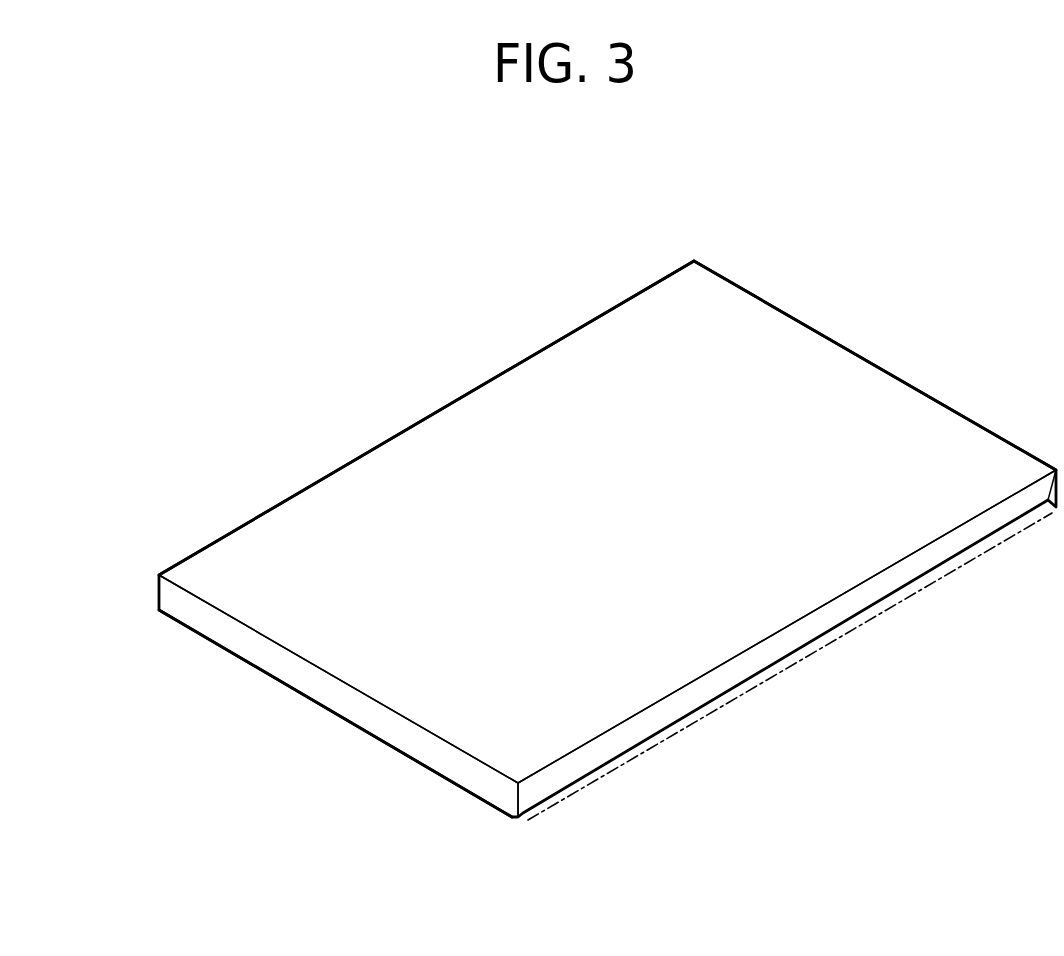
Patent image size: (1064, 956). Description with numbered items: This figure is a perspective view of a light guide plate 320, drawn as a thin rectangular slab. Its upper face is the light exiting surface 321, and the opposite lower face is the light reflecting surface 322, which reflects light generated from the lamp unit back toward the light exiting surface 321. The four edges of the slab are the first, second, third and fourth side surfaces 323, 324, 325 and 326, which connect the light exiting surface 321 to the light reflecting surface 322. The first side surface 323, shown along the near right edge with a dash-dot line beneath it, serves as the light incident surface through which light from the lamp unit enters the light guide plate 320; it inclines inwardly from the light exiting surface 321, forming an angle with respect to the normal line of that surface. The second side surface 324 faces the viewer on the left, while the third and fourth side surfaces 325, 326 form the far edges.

The light guide plate 320 is at (603, 525).
The light exiting surface 321 is at (795, 373).
The light reflecting surface 322 is at (398, 752).
The first side surface 323 is at (793, 638).
The second side surface 324 is at (295, 668).
The third side surface 325 is at (443, 407).
The fourth side surface 326 is at (930, 393).